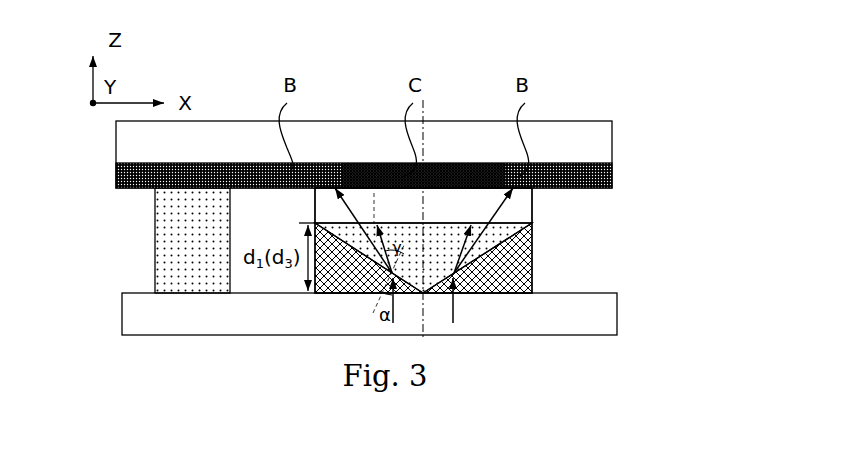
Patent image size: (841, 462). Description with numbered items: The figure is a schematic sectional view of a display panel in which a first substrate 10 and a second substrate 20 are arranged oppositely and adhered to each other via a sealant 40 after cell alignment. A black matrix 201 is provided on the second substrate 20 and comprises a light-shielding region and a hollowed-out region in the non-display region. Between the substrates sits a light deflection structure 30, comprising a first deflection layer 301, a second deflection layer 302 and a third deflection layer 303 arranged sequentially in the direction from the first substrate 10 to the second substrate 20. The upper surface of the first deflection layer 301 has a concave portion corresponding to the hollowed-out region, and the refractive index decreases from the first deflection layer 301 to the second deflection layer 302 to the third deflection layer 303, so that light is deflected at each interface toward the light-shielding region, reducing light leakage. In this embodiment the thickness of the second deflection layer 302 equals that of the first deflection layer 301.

The first substrate 10 is at (157, 317).
The second substrate 20 is at (587, 135).
The light deflection structure 30 is at (516, 240).
The sealant 40 is at (192, 228).
The black matrix 201 is at (293, 58).
The first deflection layer 301 is at (520, 273).
The second deflection layer 302 is at (503, 237).
The third deflection layer 303 is at (520, 200).